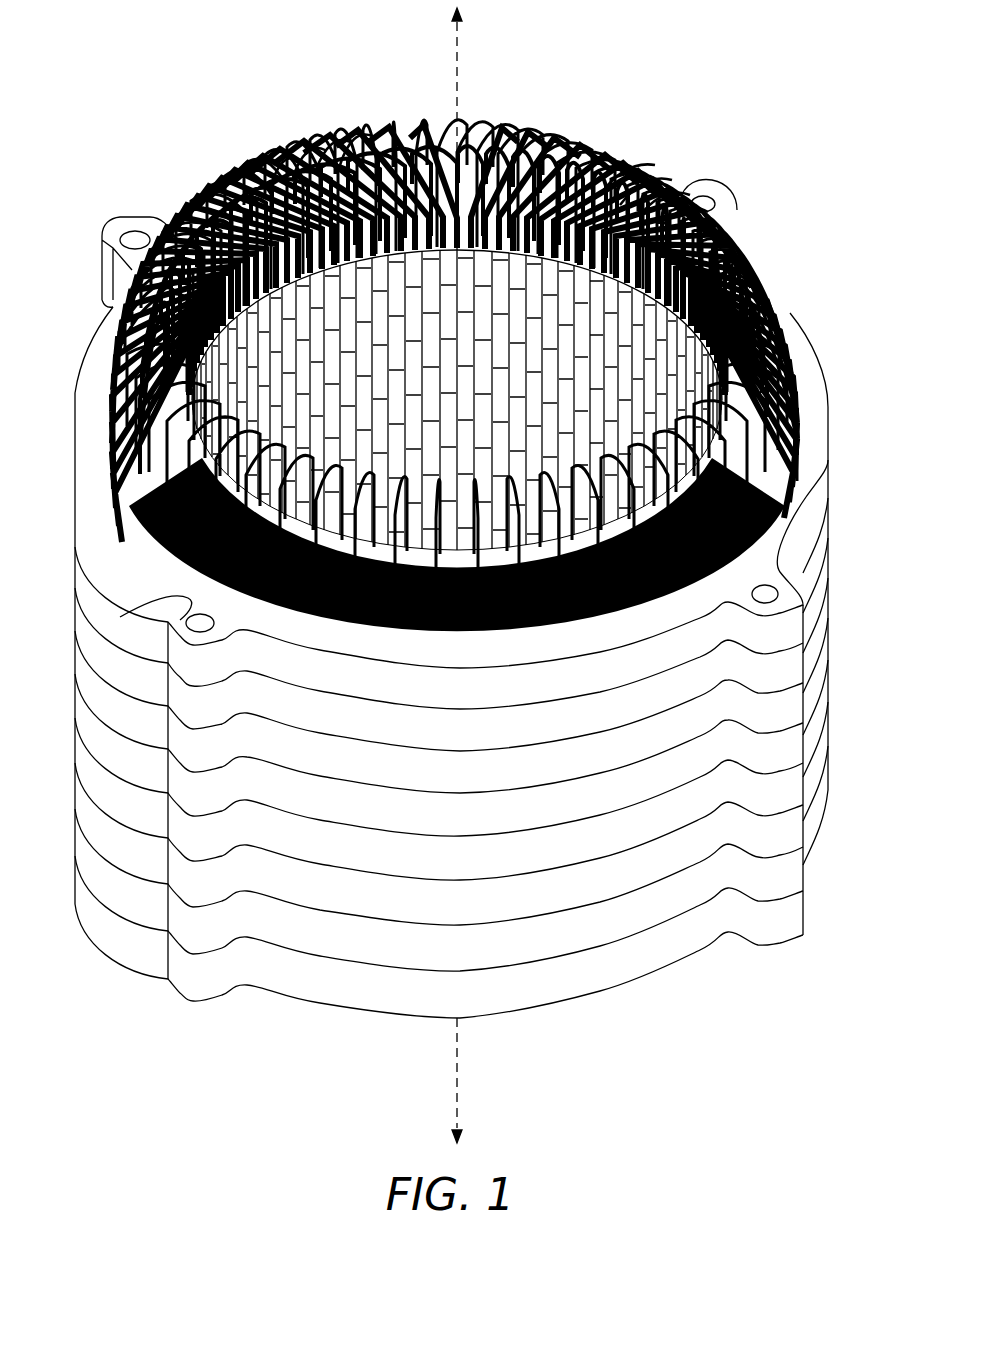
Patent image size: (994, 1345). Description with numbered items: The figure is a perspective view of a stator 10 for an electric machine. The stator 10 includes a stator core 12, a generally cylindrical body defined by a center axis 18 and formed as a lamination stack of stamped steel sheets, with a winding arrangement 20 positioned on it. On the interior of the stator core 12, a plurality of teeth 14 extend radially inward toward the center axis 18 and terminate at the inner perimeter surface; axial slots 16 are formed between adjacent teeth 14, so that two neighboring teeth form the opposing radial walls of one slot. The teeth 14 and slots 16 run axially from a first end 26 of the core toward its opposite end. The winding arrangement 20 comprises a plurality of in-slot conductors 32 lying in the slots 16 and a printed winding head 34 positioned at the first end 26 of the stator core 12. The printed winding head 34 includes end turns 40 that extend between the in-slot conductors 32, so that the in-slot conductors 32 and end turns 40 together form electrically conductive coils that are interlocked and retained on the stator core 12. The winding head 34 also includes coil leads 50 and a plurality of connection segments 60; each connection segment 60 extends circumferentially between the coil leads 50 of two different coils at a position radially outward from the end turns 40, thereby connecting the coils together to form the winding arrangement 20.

The stator 10 is at (472, 528).
The stator core 12 is at (128, 786).
The teeth 14 is at (565, 352).
The axial slots 16 is at (515, 381).
The center axis 18 is at (459, 80).
The winding arrangement 20 is at (214, 188).
The first end 26 is at (785, 516).
The in-slot conductors 32 is at (522, 282).
The printed winding head 34 is at (605, 143).
The end turns 40 is at (663, 184).
The coil leads 50 is at (337, 140).
The connection segments 60 is at (179, 539).